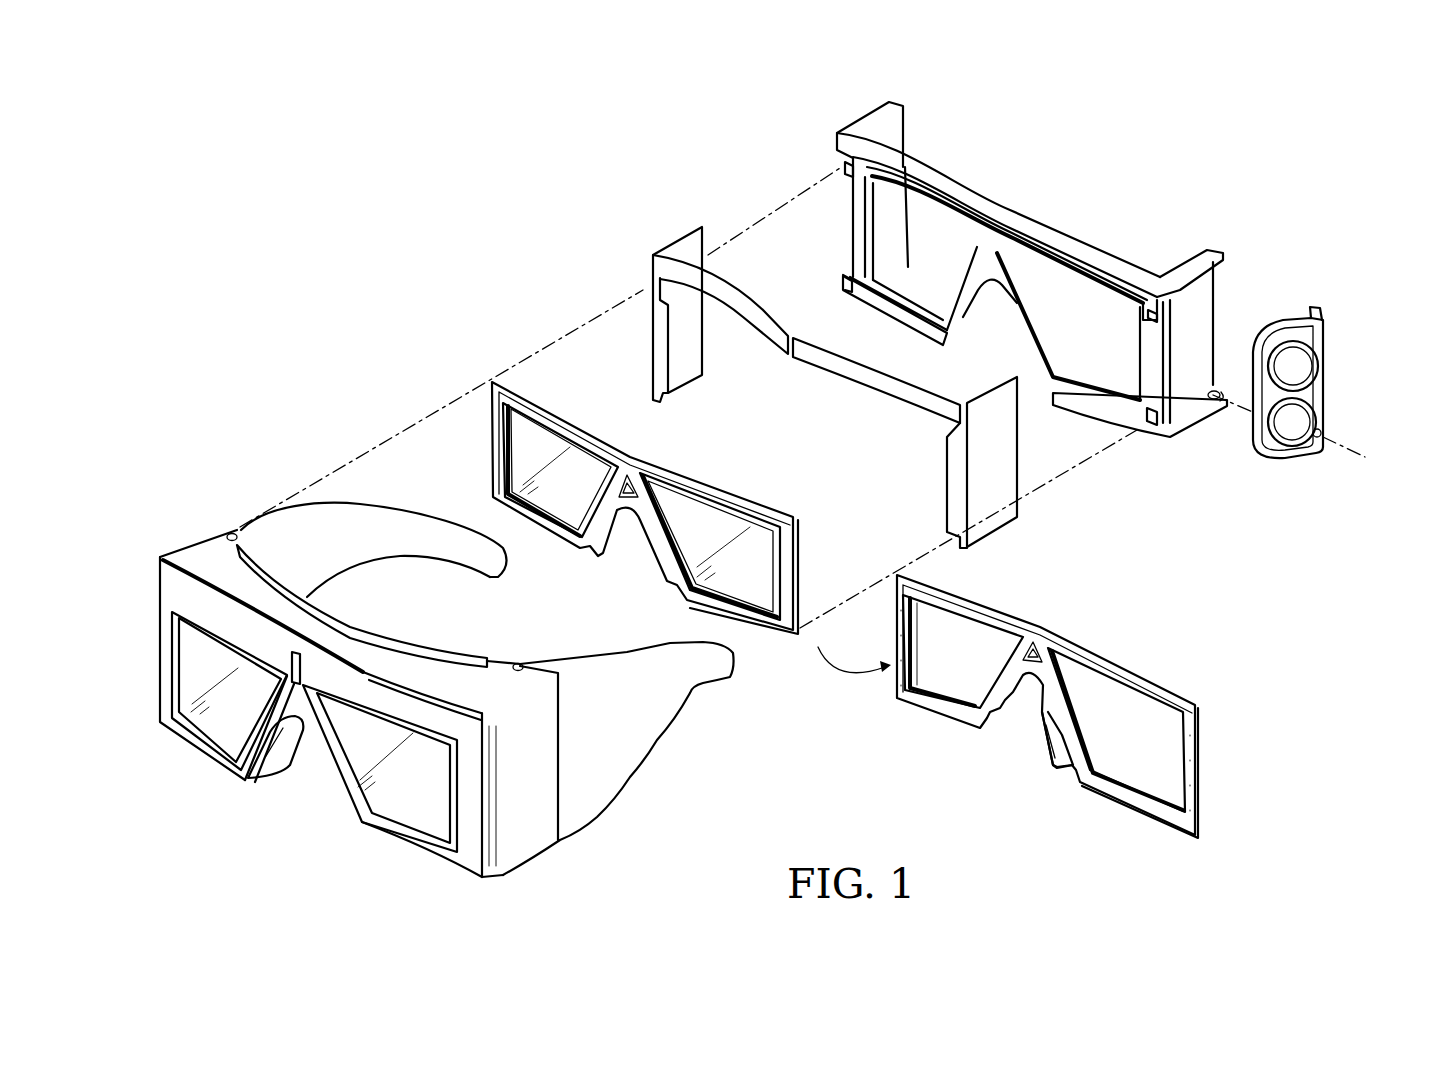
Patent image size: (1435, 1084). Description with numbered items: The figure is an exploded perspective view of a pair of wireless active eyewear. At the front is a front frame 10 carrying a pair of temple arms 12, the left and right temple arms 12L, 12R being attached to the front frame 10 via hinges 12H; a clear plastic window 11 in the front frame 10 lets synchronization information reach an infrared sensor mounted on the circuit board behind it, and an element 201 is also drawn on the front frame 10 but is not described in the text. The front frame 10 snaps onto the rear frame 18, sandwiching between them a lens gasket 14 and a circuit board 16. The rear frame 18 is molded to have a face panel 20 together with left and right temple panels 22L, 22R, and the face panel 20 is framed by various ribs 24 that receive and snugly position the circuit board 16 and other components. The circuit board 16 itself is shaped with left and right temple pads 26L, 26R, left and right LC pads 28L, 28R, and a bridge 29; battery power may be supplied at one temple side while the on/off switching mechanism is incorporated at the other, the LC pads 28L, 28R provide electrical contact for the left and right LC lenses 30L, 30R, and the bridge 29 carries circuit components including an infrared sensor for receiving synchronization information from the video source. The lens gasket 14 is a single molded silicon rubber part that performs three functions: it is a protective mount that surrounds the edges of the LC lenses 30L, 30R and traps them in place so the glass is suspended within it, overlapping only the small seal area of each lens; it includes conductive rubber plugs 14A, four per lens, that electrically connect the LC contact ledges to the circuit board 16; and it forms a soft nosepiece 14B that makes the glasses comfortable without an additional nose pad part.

The front frame 10 is at (168, 592).
The clear plastic window 11 is at (262, 722).
The temple arms 12 is at (238, 522).
The hinges 12H is at (227, 536).
The right temple arm 12R is at (336, 547).
The left temple arm 12L is at (627, 745).
The right lens 201 is at (197, 670).
The lens gasket 14 is at (588, 508).
The conductive rubber plugs 14A is at (1047, 717).
The soft nosepiece 14B is at (1047, 751).
The circuit board 16 is at (677, 282).
The rear frame 18 is at (836, 163).
The face panel 20 is at (840, 236).
The right temple panel 22R is at (903, 138).
The left temple panel 22L is at (1200, 296).
The ribs 24 is at (945, 240).
The right temple pad 26R is at (674, 228).
The left temple pad 26L is at (1004, 502).
The right LC pad 28R is at (670, 372).
The left LC pad 28L is at (947, 497).
The bridge 29 is at (890, 392).
The right LC lens 30R is at (530, 470).
The left LC lens 30L is at (717, 533).